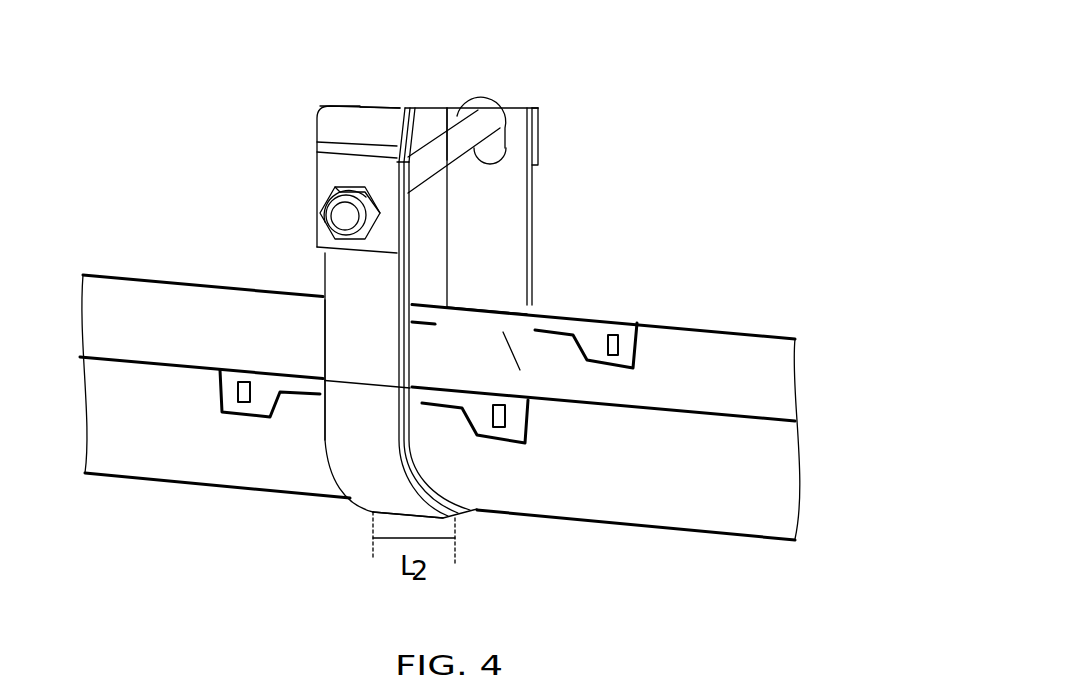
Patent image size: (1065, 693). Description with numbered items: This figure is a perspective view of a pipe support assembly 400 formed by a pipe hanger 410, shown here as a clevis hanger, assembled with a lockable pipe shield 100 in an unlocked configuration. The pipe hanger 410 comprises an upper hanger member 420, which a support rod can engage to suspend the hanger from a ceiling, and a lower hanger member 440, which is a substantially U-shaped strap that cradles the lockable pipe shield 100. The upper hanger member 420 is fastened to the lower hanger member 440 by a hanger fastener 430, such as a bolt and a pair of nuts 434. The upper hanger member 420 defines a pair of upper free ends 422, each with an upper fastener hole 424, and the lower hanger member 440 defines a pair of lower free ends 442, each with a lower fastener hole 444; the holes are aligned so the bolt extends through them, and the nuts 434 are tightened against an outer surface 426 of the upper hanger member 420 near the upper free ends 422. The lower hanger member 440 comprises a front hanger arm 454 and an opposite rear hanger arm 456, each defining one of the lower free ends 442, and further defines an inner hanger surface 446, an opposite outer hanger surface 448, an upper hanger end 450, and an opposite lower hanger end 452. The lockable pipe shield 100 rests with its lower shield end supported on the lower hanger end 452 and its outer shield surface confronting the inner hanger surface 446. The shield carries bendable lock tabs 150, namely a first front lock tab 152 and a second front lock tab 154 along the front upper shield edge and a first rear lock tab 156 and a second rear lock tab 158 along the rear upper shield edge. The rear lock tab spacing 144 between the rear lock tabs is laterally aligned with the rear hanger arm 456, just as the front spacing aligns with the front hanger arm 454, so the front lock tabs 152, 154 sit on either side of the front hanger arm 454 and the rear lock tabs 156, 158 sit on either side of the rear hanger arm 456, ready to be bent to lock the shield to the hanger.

The lockable pipe shield 100 is at (765, 313).
The rear lock tab spacing 144 is at (503, 332).
The lock tabs 150 is at (263, 390).
The first front lock tab 152 is at (244, 392).
The second front lock tab 154 is at (483, 413).
The first rear lock tab 156 is at (473, 312).
The second rear lock tab 158 is at (595, 338).
The pipe support assembly 400 is at (734, 89).
The pipe hanger 410 is at (302, 132).
The upper hanger member 420 is at (355, 115).
The upper free ends 422 is at (327, 240).
The upper fastener hole 424 is at (540, 133).
The outer surface 426 is at (390, 115).
The hanger fastener 430 is at (450, 157).
The nuts 434 is at (340, 187).
The lower hanger member 440 is at (345, 447).
The lower free ends 442 is at (515, 123).
The lower fastener hole 444 is at (508, 157).
The inner hanger surface 446 is at (510, 225).
The outer hanger surface 448 is at (343, 297).
The upper hanger end 450 is at (413, 157).
The lower hanger end 452 is at (383, 513).
The front hanger arm 454 is at (337, 370).
The rear hanger arm 456 is at (510, 197).